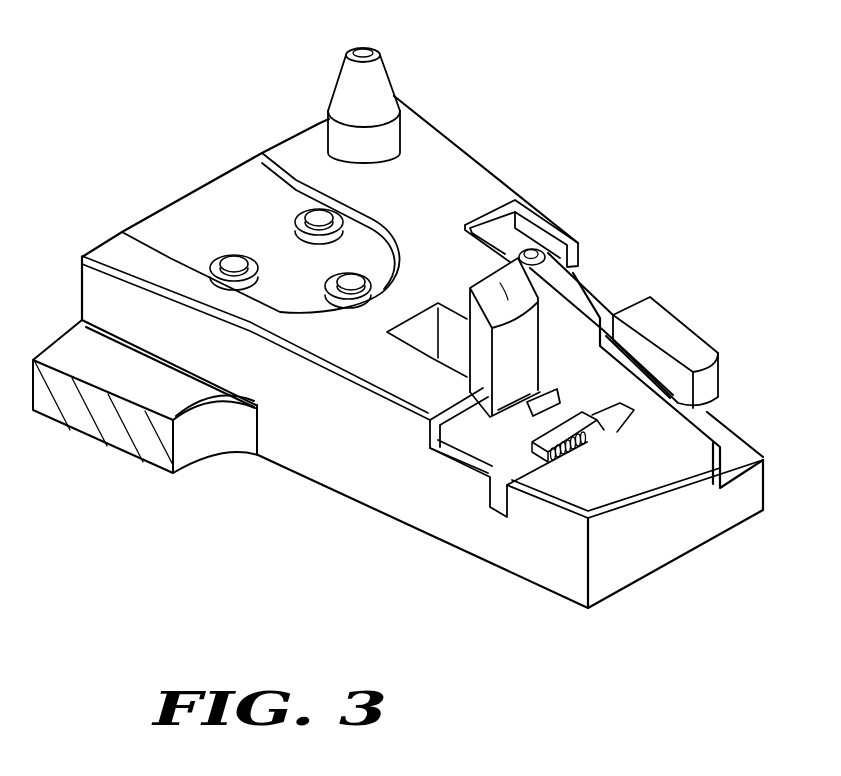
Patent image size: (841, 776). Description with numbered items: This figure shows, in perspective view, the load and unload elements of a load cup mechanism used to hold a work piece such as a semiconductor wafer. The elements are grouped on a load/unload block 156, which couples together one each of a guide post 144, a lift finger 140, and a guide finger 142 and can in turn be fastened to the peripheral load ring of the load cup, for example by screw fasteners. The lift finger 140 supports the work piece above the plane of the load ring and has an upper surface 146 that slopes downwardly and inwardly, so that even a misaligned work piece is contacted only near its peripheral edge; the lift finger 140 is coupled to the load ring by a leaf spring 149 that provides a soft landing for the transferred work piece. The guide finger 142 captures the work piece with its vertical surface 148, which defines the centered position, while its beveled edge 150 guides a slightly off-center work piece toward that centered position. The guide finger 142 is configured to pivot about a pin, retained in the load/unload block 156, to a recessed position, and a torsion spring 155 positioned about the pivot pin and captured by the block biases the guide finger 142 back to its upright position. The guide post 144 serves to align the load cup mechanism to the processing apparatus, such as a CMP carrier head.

The lift finger 140 is at (708, 388).
The guide finger 142 is at (442, 368).
The guide post 144 is at (383, 83).
The upper surface 146 is at (678, 332).
The vertical surface 148 is at (518, 386).
The leaf spring 149 is at (593, 303).
The beveled edge 150 is at (508, 292).
The torsion spring 155 is at (603, 442).
The load/unload block 156 is at (677, 533).